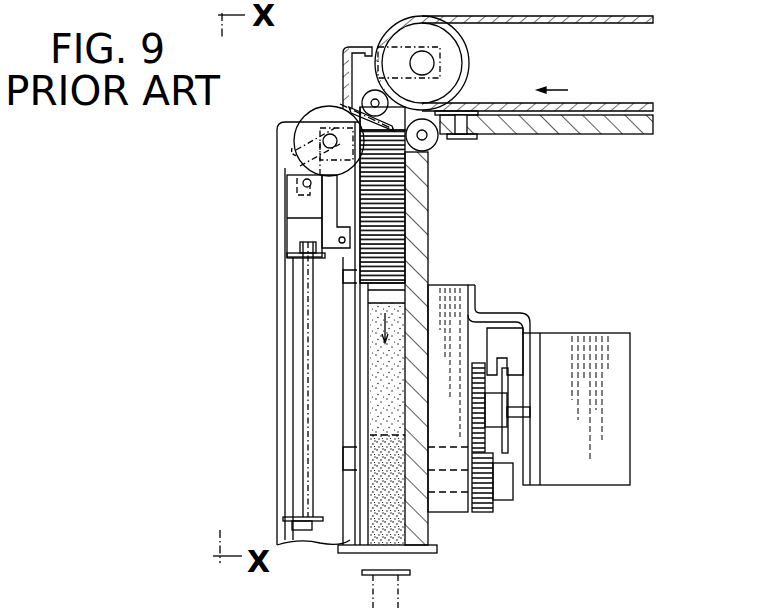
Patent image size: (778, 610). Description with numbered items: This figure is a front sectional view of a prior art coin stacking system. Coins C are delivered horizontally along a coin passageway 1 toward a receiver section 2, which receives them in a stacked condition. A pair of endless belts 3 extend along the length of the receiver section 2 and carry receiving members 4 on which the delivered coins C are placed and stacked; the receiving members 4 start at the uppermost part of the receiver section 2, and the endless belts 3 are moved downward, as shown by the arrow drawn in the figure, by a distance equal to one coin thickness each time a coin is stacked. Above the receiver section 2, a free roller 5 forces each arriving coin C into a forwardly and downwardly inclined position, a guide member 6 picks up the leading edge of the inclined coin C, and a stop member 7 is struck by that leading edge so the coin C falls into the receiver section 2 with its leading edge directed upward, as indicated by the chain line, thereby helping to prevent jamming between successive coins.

The coin passageway 1 is at (625, 13).
The receiver section 2 is at (431, 232).
The endless belts 3 is at (378, 395).
The receiving members 4 is at (380, 290).
The free roller 5 is at (380, 88).
The guide member 6 is at (306, 120).
The stop member 7 is at (343, 56).
The coin C is at (350, 108).